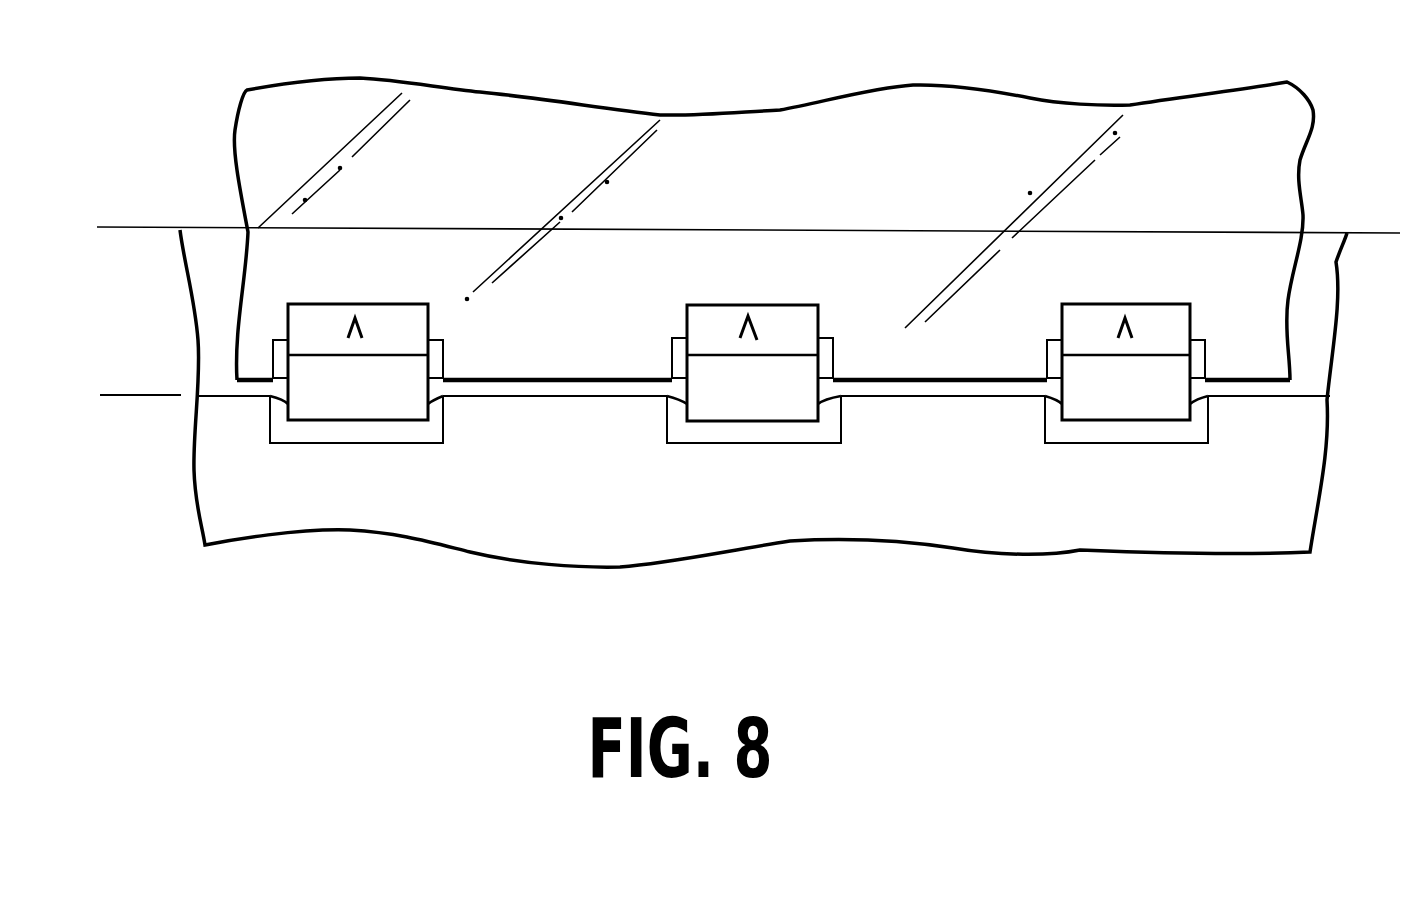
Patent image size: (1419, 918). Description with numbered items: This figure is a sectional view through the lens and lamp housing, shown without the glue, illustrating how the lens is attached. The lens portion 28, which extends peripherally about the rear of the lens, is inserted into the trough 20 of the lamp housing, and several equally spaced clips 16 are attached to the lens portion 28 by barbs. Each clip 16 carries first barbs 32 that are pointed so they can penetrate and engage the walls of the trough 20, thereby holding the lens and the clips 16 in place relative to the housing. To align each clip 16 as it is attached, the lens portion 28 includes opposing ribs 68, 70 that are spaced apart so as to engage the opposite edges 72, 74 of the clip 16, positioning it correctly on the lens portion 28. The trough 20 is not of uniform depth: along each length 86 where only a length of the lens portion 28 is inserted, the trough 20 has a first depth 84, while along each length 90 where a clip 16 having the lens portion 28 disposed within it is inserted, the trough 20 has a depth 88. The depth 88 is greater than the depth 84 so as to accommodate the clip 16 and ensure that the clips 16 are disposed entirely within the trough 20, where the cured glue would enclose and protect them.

The clip 16 is at (405, 278).
The trough 20 is at (211, 232).
The lens portion 28 is at (1283, 158).
The first barb 32 is at (740, 338).
The rib 68 is at (273, 350).
The rib 70 is at (443, 352).
The edge of clip 72 is at (288, 398).
The edge of clip 74 is at (432, 396).
The first depth 84 is at (145, 256).
The length 86 is at (667, 608).
The second depth 88 is at (1225, 443).
The length 90 is at (272, 452).